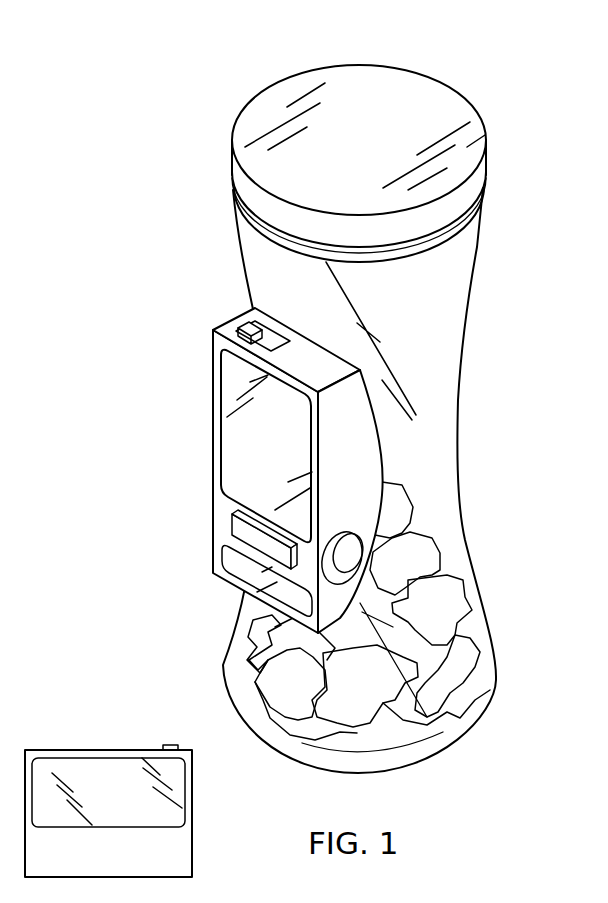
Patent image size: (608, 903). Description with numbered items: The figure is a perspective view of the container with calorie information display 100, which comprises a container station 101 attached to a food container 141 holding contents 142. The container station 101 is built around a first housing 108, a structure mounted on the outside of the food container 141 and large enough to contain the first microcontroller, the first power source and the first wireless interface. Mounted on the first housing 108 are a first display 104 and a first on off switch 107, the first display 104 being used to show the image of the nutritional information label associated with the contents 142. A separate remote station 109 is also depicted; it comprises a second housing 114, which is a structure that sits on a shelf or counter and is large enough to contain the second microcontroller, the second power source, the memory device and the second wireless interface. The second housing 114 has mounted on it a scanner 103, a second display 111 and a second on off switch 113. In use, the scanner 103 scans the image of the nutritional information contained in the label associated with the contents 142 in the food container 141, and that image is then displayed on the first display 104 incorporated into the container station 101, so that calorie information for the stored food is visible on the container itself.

The container with calorie information display 100 is at (127, 85).
The container station 101 is at (484, 130).
The scanner 103 is at (235, 531).
The first display 104 is at (244, 425).
The first on off switch 107 is at (248, 326).
The first housing 108 is at (430, 413).
The remote station 109 is at (192, 825).
The second display 111 is at (92, 783).
The second on off switch 113 is at (170, 745).
The second housing 114 is at (192, 797).
The food container 141 is at (458, 603).
The contents 142 is at (412, 677).